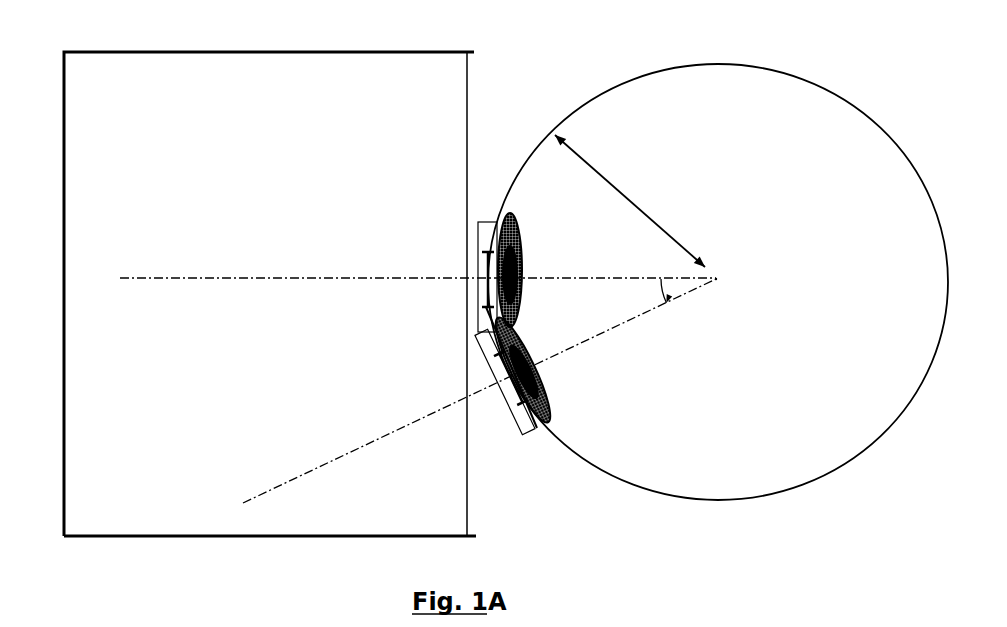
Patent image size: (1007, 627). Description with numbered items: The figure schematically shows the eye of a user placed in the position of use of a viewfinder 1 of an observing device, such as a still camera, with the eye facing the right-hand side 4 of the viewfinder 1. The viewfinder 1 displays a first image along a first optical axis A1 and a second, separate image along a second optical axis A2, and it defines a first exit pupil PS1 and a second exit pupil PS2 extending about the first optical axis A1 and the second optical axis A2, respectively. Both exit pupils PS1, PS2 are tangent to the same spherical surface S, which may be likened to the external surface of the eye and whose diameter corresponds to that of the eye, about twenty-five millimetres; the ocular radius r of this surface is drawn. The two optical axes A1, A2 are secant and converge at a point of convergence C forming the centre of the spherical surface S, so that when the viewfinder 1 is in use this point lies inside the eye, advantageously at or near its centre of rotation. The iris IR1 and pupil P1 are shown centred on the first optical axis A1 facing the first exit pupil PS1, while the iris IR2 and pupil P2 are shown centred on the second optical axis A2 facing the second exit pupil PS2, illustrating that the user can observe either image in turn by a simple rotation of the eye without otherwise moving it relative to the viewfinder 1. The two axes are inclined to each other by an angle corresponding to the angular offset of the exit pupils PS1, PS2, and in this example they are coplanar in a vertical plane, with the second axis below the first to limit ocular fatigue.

The viewfinder 1 is at (80, 62).
The surface of the object 4 is at (497, 537).
The spherical surface S is at (670, 68).
The point of convergence C is at (724, 280).
The ocular radius r is at (630, 201).
The first optical axis A1 is at (177, 270).
The second optical axis A2 is at (290, 468).
The first exit pupil PS1 is at (460, 277).
The second exit pupil PS2 is at (480, 381).
The iris IR1 is at (488, 250).
The iris IR2 is at (522, 405).
The pupil P1 is at (521, 252).
The pupil P2 is at (547, 377).